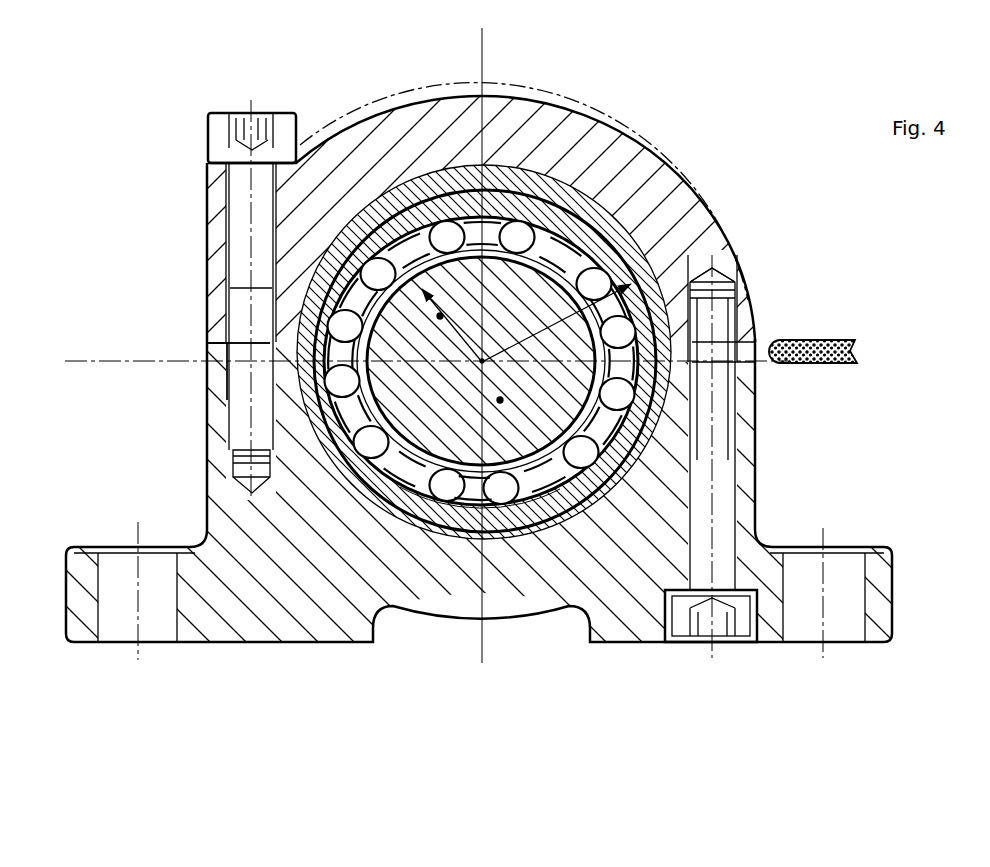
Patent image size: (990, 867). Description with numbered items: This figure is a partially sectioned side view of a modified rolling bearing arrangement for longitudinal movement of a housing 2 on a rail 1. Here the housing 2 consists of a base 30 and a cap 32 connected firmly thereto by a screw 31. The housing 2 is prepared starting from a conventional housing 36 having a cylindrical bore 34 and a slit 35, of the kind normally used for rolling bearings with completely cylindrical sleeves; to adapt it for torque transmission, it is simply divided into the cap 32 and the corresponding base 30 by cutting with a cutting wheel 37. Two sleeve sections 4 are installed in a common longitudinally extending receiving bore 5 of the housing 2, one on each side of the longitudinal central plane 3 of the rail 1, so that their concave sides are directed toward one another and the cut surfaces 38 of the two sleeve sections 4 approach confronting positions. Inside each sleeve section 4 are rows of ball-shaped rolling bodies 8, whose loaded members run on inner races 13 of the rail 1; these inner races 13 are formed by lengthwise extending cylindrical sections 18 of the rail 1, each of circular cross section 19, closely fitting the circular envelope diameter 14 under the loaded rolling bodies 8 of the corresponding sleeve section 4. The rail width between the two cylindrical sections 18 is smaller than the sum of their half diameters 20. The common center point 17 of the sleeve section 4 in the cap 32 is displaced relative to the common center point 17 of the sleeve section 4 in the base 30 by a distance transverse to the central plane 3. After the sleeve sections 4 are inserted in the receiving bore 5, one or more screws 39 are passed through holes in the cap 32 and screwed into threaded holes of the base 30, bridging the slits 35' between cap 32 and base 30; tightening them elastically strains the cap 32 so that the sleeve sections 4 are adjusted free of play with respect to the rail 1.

The rail 1 is at (392, 377).
The housing 2 is at (800, 457).
The longitudinal central plane 3 is at (99, 364).
The sleeve section 4 is at (425, 220).
The receiving bore 5 is at (522, 480).
The rolling bodies 8 is at (375, 438).
The inner races 13 is at (482, 332).
The circular envelope diameter 14 is at (483, 352).
The common center point 17 is at (345, 195).
The cylindrical section 18 is at (580, 185).
The circular cross section 19 is at (500, 400).
The half diameter 20 is at (440, 316).
The base 30 is at (882, 570).
The screw 31 is at (720, 530).
The cap 32 is at (650, 205).
The cylindrical bore 34 is at (562, 186).
The slit 35 is at (219, 317).
The slits 35' is at (162, 332).
The housing 36 is at (545, 90).
The cutting wheel 37 is at (805, 343).
The cut surfaces 38 is at (717, 262).
The screws 39 is at (222, 128).